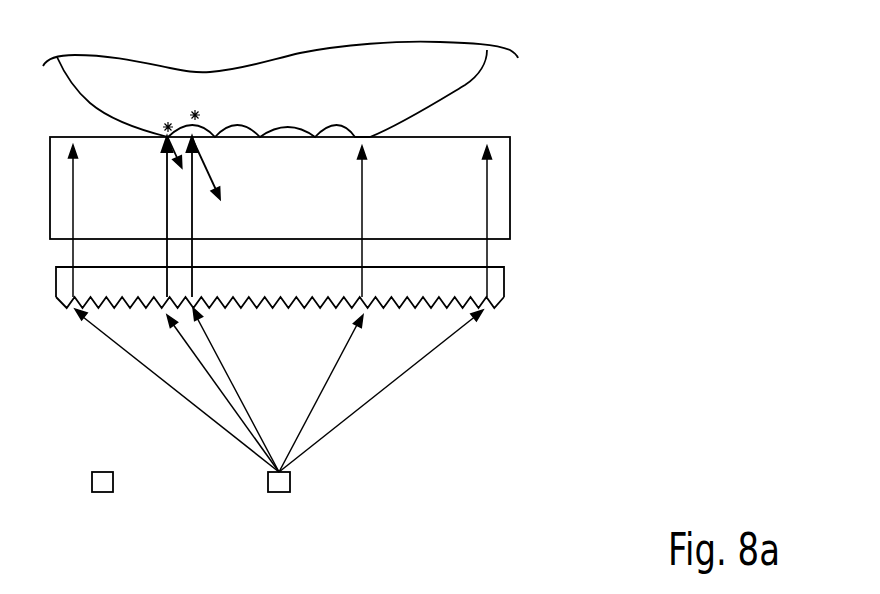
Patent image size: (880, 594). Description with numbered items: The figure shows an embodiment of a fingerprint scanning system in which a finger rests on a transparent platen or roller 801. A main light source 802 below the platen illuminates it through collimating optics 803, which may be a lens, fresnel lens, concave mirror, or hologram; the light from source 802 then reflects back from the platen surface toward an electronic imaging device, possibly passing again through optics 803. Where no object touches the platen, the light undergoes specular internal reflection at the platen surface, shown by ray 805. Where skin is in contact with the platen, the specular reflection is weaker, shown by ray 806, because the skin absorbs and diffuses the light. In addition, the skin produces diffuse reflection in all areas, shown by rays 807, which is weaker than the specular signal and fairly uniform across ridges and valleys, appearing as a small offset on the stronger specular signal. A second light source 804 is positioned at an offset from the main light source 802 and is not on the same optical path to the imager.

The transparent platen 801 is at (498, 168).
The main light source 802 is at (290, 481).
The collimating optics 803 is at (500, 291).
The second light source 804 is at (113, 481).
The ray 805 is at (212, 180).
The ray 806 is at (168, 148).
The rays 807 is at (168, 119).